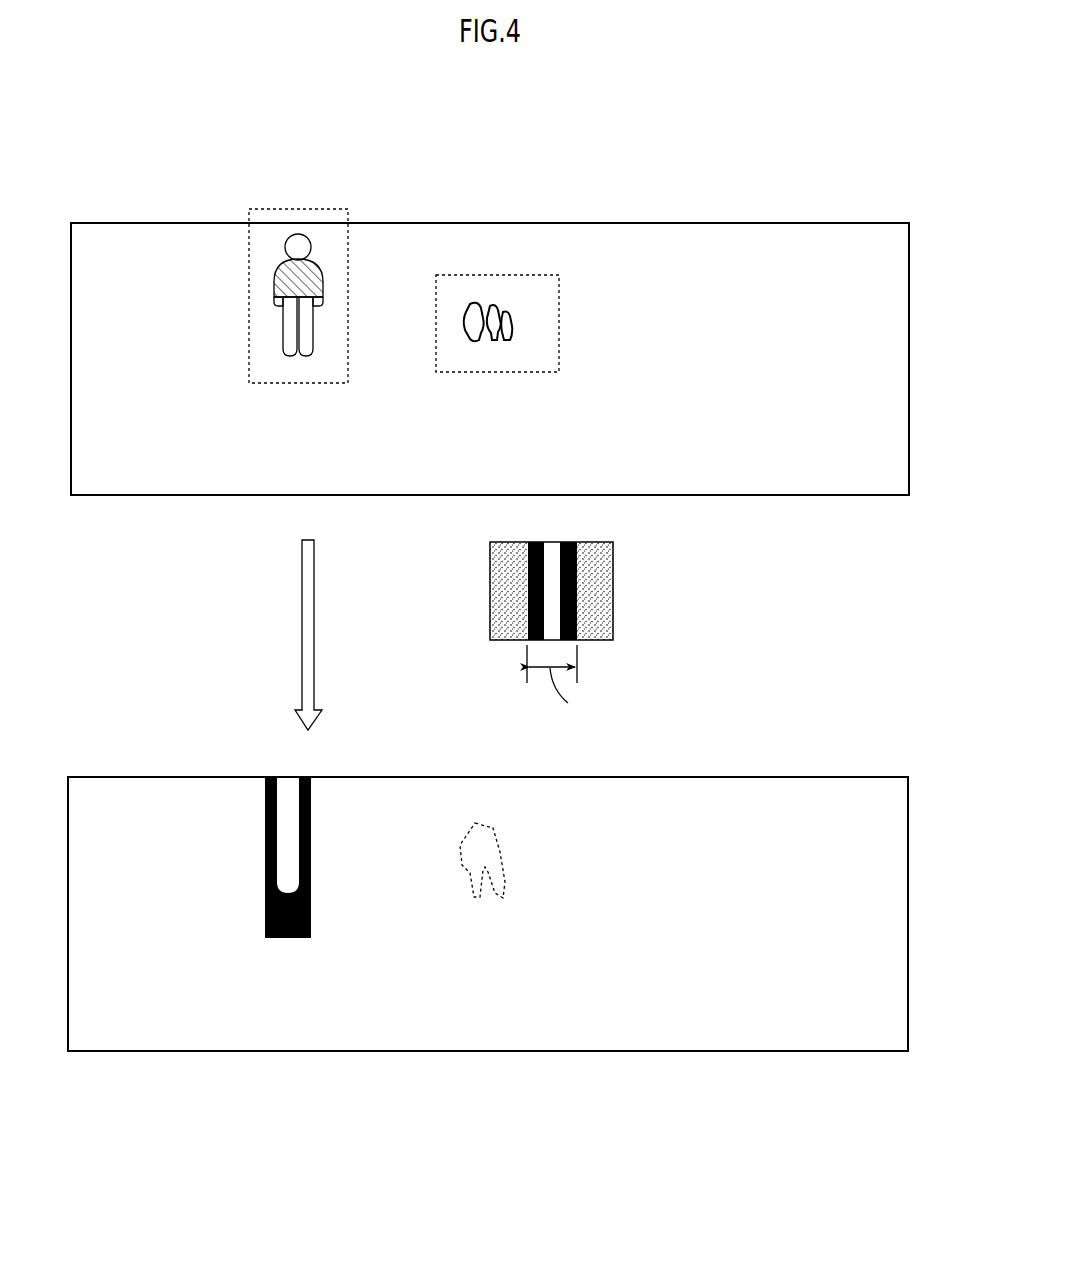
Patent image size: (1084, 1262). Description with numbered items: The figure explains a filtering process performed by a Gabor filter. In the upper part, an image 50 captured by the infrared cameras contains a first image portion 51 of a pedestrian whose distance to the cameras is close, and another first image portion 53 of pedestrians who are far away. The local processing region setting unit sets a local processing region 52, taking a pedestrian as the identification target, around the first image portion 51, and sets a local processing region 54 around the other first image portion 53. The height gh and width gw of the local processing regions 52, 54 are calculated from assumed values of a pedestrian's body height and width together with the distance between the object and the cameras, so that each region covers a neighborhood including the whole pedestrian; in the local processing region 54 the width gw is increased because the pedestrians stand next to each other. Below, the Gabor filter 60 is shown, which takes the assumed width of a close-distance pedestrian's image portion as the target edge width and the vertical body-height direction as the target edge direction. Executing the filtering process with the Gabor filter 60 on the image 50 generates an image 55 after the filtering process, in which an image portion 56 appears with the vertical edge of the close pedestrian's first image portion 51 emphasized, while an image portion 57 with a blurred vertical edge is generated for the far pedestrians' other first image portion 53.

The image 50 is at (775, 222).
The first image portion 51 is at (282, 284).
The local processing region 52 is at (310, 209).
The other first image portion 53 is at (512, 331).
The local processing region 54 is at (497, 272).
The image after the filtering process 55 is at (775, 777).
The image portion 56 is at (319, 923).
The image portion 57 is at (503, 900).
The Gabor filter 60 is at (613, 584).